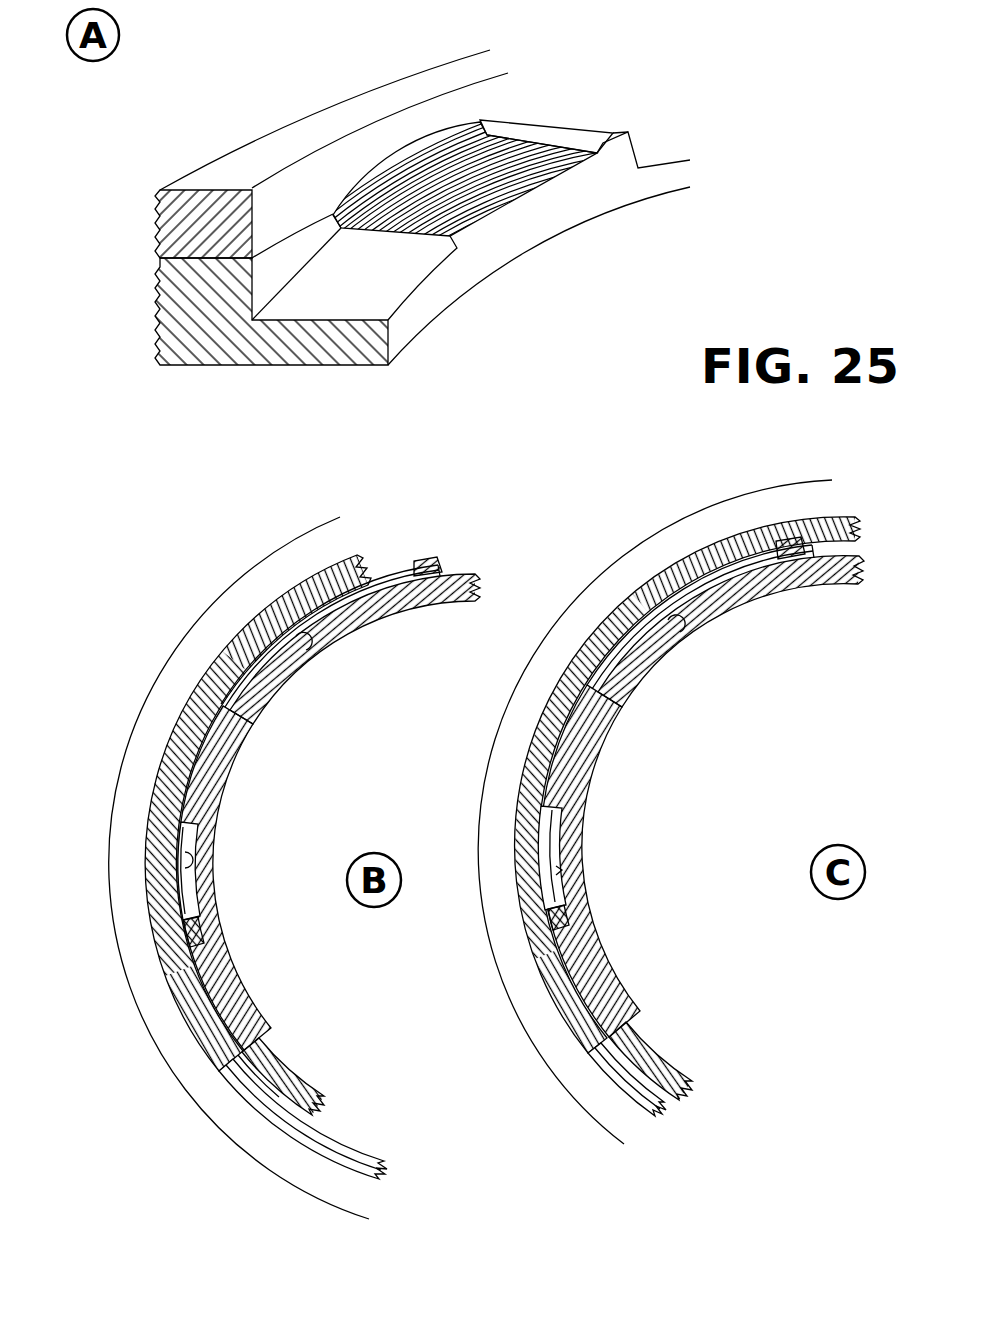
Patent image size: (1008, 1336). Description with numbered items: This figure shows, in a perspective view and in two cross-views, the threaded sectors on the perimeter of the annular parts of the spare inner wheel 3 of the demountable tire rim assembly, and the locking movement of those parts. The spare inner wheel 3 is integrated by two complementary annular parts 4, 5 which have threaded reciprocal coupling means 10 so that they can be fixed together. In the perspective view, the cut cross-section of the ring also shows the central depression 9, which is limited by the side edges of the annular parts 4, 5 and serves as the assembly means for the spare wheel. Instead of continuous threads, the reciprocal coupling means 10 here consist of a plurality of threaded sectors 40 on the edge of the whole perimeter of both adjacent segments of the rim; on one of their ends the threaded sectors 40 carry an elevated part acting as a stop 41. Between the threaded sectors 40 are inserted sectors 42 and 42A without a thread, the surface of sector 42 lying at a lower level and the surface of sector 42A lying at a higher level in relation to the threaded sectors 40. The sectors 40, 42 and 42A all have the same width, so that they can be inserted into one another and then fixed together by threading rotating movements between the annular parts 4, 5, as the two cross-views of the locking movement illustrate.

In FIG. 25A, the spare inner wheel 3 is at (412, 97).
In FIG. 25B, the spare inner wheel 3 is at (268, 585).
In FIG. 25C, the spare inner wheel 3 is at (738, 528).
In FIG. 25A, the annular part 4 is at (582, 200).
In FIG. 25B, the annular part 4 is at (370, 623).
In FIG. 25C, the annular part 4 is at (606, 770).
In FIG. 25B, the annular part 5 is at (143, 870).
In FIG. 25C, the annular part 5 is at (540, 980).
In FIG. 25A, the central depression 9 is at (185, 262).
In FIG. 25A, the threaded reciprocal coupling means 10 is at (410, 173).
In FIG. 25B, the threaded reciprocal coupling means 10 is at (402, 572).
In FIG. 25A, the threaded sector 40 is at (333, 217).
In FIG. 25B, the threaded sector 40 is at (302, 647).
In FIG. 25C, the threaded sector 40 is at (680, 620).
In FIG. 25A, the stop 41 is at (547, 127).
In FIG. 25B, the stop 41 is at (423, 554).
In FIG. 25A, the unthreaded sector 42 is at (356, 298).
In FIG. 25C, the unthreaded sector 42 is at (560, 870).
In FIG. 25C, the unthreaded sector 42A is at (560, 852).